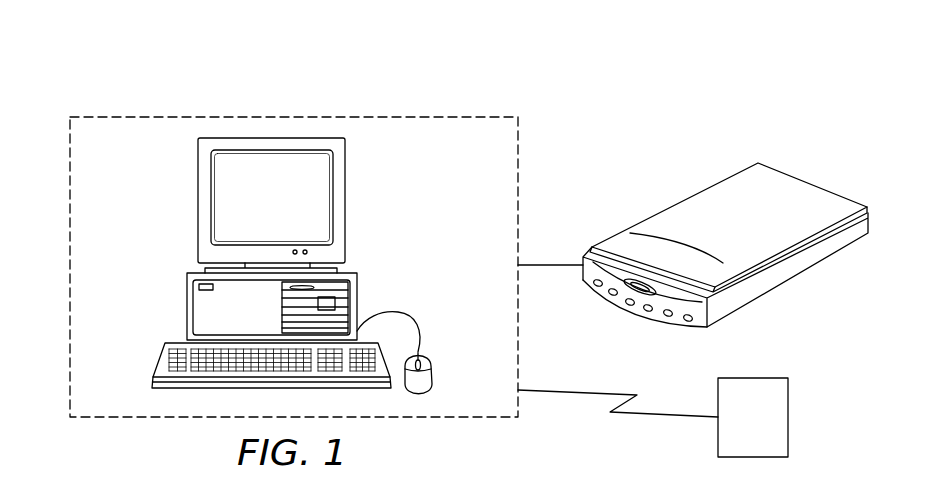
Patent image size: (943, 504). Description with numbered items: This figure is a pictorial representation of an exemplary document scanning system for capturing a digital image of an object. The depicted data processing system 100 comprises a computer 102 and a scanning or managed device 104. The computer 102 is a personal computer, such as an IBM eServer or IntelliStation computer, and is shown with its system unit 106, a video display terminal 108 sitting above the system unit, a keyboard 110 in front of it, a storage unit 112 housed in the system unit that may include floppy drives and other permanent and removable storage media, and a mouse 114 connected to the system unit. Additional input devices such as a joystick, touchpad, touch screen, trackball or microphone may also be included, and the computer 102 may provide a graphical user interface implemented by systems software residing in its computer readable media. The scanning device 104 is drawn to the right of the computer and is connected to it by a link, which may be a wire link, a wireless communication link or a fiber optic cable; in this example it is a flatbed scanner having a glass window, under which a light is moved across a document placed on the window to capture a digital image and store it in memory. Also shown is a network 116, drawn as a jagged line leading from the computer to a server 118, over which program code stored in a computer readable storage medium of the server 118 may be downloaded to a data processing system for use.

The data processing system 100 is at (469, 261).
The computer 102 is at (294, 267).
The scanning device 104 is at (764, 234).
The system unit 106 is at (238, 304).
The video display terminal 108 is at (345, 200).
The keyboard 110 is at (160, 358).
The storage unit 112 is at (283, 303).
The mouse 114 is at (432, 387).
The network 116 is at (658, 416).
The server 118 is at (772, 427).